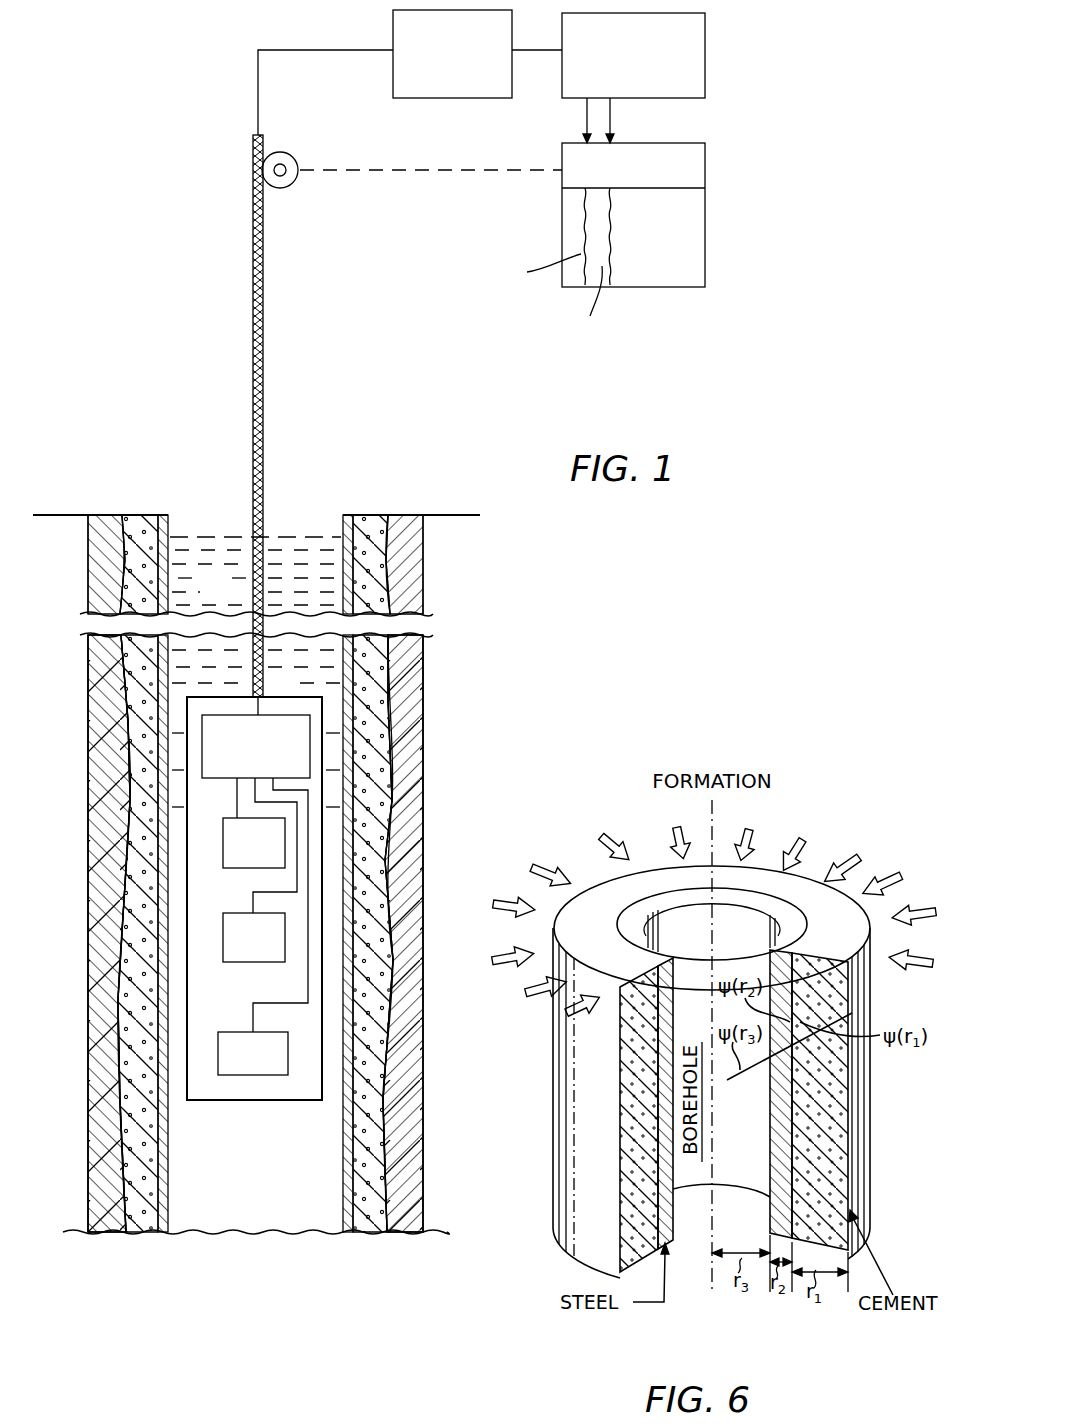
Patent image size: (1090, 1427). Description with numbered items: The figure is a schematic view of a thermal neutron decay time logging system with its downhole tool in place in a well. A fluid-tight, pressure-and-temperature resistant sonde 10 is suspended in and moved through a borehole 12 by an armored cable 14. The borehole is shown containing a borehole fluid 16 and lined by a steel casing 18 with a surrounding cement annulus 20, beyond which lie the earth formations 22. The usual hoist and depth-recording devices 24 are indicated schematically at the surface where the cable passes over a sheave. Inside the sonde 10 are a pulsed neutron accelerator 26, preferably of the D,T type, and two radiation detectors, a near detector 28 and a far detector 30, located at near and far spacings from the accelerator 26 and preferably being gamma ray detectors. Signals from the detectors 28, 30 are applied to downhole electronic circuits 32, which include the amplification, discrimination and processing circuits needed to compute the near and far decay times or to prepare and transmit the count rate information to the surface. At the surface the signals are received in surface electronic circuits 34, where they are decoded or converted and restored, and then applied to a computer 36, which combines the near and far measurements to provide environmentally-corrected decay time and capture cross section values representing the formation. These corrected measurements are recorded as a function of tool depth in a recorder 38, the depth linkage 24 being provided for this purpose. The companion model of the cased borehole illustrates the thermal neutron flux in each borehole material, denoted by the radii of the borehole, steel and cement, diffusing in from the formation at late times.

The sonde 10 is at (275, 690).
The borehole 12 is at (203, 528).
The armored cable 14 is at (263, 422).
The borehole fluid 16 is at (229, 595).
The steel casing 18 is at (345, 1168).
The cement annulus 20 is at (380, 1170).
The earth formations 22 is at (412, 860).
The hoist and depth-recording devices 24 is at (371, 173).
The pulsed neutron accelerator 26 is at (230, 1075).
The near detector 28 is at (223, 950).
The far detector 30 is at (222, 846).
The downhole electronic circuits 32 is at (310, 745).
The surface electronic circuits 34 is at (393, 22).
The computer 36 is at (705, 32).
The recorder 38 is at (705, 168).